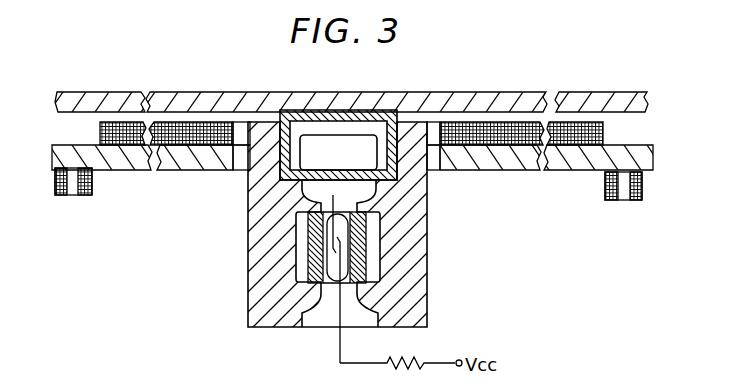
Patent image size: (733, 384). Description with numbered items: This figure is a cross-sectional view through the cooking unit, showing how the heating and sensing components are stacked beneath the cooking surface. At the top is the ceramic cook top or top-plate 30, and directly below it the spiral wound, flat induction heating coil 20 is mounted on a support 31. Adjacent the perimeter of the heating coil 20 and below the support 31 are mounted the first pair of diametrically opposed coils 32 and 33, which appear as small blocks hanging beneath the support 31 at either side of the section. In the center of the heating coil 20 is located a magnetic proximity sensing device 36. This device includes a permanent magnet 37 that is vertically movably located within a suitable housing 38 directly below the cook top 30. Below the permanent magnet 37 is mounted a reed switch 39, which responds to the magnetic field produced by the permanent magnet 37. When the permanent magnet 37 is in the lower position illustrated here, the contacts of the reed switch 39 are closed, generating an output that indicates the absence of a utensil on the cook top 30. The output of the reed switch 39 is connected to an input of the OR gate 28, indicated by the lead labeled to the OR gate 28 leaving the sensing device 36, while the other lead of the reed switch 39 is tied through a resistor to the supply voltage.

The induction heating coil 20 is at (100, 131).
The OR gate 28 is at (333, 195).
The top-plate 30 is at (539, 108).
The support 31 is at (655, 161).
The first diametrically opposed coil 32 is at (93, 186).
The first diametrically opposed coil 33 is at (644, 187).
The magnetic proximity sensing device 36 is at (428, 233).
The permanent magnet 37 is at (310, 165).
The housing 38 is at (302, 116).
The reed switch 39 is at (334, 282).